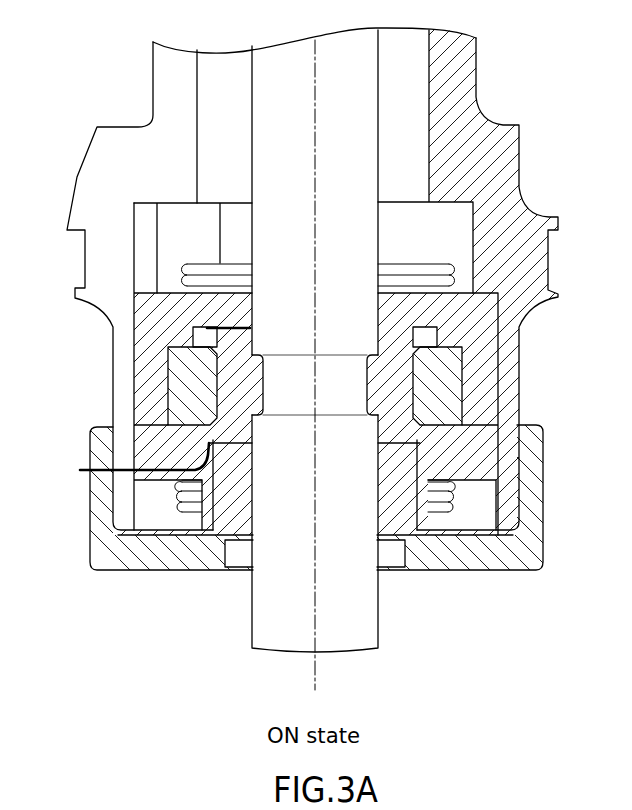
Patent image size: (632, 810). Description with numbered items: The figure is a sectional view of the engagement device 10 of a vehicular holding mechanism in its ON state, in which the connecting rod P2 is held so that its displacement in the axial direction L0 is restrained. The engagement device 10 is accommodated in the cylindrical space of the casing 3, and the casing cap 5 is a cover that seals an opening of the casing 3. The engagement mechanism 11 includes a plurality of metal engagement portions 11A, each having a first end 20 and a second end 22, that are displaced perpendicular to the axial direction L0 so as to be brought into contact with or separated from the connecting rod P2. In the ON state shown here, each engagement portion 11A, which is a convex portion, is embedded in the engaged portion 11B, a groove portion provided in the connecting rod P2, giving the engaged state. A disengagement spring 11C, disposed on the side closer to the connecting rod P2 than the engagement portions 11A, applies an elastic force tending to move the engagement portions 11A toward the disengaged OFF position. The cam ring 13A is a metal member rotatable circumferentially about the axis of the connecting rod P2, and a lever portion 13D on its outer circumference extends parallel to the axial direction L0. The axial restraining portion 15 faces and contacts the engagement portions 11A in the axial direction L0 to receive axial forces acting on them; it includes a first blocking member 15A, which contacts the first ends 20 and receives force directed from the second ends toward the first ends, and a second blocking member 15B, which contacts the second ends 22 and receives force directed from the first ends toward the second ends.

The casing 3 is at (78, 178).
The casing cap 5 is at (78, 522).
The engagement device 10 is at (134, 351).
The engagement mechanism 11 is at (315, 366).
The engagement portion 11A is at (237, 533).
The engaged portion 11B is at (293, 397).
The disengagement spring 11C is at (134, 330).
The cam ring 13A is at (168, 388).
The lever portion 13D is at (168, 222).
The axial restraining portion 15 is at (498, 300).
The first blocking member 15A is at (521, 210).
The second blocking member 15B is at (532, 470).
The first end 20 is at (239, 328).
The second end 22 is at (80, 470).
The connecting rod P2 is at (356, 630).
The axial direction L0 is at (319, 673).